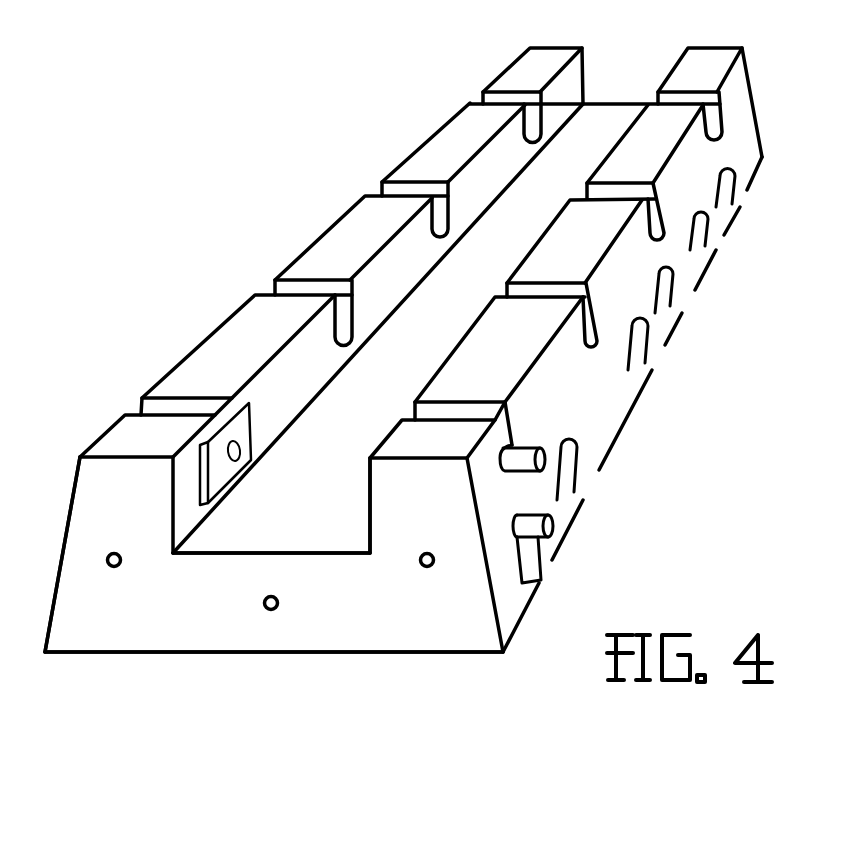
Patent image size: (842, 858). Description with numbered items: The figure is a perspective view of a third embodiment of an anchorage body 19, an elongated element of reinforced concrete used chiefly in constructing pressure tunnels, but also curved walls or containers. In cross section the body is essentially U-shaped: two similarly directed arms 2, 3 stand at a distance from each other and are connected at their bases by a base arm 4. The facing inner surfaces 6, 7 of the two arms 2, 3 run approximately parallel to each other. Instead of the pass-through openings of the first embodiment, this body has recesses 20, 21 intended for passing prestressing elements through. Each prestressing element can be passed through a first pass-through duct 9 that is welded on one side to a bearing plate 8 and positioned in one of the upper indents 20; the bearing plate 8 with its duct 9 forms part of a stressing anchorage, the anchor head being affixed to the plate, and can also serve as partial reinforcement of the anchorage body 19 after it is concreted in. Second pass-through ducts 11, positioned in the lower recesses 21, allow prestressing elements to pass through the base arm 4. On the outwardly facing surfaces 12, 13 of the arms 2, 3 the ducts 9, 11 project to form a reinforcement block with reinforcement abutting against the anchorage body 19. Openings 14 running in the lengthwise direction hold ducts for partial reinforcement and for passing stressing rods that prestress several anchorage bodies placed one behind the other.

The arm 2 is at (541, 62).
The arm 3 is at (706, 62).
The base arm 4 is at (178, 633).
The inner surface 6 is at (178, 517).
The inner surface 7 is at (368, 533).
The bearing plate 8 is at (242, 433).
The first pass-through duct 9 is at (535, 456).
The second pass-through duct 11 is at (548, 527).
The outwardly facing surface 12 is at (68, 510).
The outwardly facing surface 13 is at (623, 392).
The lengthwise openings 14 is at (113, 569).
The anchorage body 19 is at (305, 656).
The recess 20 is at (404, 190).
The lower recess 21 is at (666, 300).